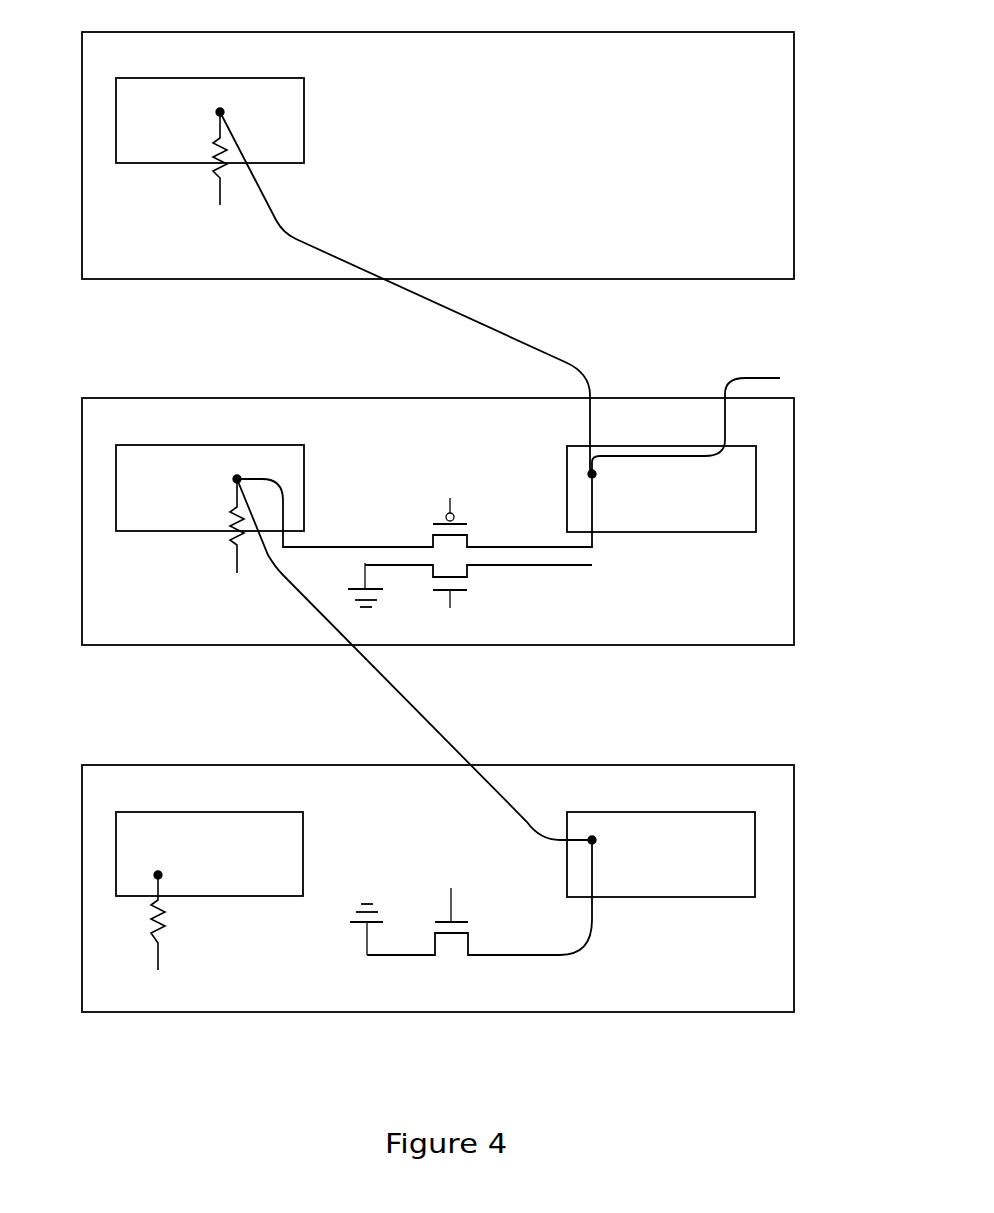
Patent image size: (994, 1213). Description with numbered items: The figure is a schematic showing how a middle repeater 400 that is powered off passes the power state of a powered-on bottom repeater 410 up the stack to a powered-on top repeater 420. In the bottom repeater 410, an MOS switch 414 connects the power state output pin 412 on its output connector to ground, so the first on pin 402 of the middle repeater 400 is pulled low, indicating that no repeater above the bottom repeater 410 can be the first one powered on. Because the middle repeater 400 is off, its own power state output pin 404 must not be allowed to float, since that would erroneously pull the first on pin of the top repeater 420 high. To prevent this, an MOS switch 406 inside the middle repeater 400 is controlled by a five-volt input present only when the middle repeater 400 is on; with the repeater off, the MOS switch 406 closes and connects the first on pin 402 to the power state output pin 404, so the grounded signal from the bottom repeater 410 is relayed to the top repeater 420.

The middle repeater 400 is at (82, 450).
The first on pin 402 is at (237, 479).
The power state output pin 404 is at (780, 378).
The MOS switch 406 is at (433, 535).
The bottom repeater 410 is at (82, 817).
The power state output pin 412 is at (755, 820).
The MOS switch 414 is at (470, 946).
The top repeater 420 is at (82, 82).